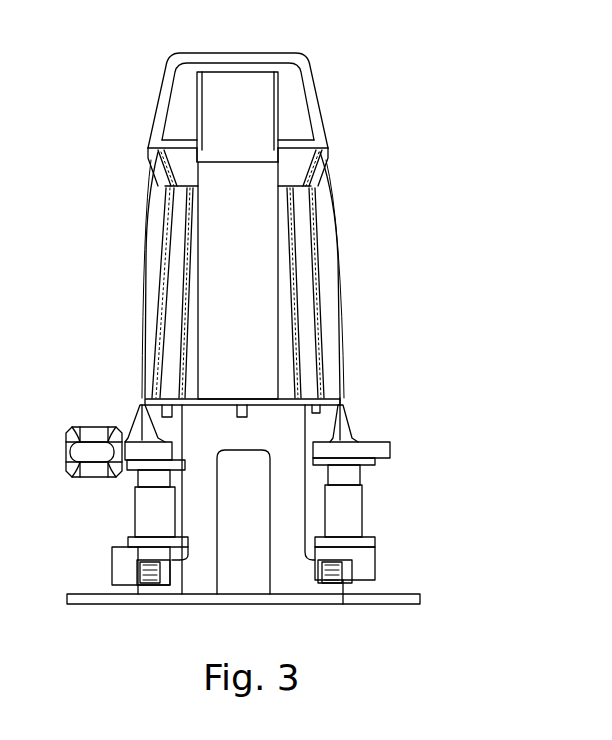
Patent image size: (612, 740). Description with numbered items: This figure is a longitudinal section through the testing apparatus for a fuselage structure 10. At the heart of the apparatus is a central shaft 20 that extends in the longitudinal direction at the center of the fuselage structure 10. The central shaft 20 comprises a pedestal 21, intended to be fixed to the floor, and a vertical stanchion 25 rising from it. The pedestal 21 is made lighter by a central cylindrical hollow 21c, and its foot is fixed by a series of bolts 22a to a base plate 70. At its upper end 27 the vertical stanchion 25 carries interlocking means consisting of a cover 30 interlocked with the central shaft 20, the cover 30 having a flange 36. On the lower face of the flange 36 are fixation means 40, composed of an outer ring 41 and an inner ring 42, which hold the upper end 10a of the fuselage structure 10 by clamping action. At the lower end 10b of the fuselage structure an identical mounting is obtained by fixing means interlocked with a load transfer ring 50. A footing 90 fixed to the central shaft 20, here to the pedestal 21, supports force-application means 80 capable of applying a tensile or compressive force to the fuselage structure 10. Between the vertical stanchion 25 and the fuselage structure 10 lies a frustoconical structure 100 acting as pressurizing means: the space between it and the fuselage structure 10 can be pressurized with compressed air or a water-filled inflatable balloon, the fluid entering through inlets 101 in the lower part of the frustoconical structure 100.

The cover 30 is at (318, 63).
The upper end of central shaft 27 is at (225, 82).
The inner ring 42 is at (190, 160).
The outer ring 41 is at (152, 152).
The flange 36 is at (323, 142).
The fixation means 40 is at (330, 167).
The upper end of fuselage structure 10a is at (162, 184).
The fuselage structure 10 is at (336, 272).
The vertical stanchion 25 is at (263, 248).
The frustoconical structure 100 is at (160, 303).
The central shaft 20 is at (345, 385).
The inlets for pressurized fluid 101 is at (145, 403).
The lower end of fuselage structure 10b is at (350, 433).
The load transfer ring 50 is at (378, 448).
The force-application means 80 is at (135, 515).
The footing 90 is at (367, 563).
The pedestal 21 is at (297, 587).
The central cylindrical hollow 21c is at (238, 582).
The bolts 22a is at (343, 603).
The base plate 70 is at (423, 593).